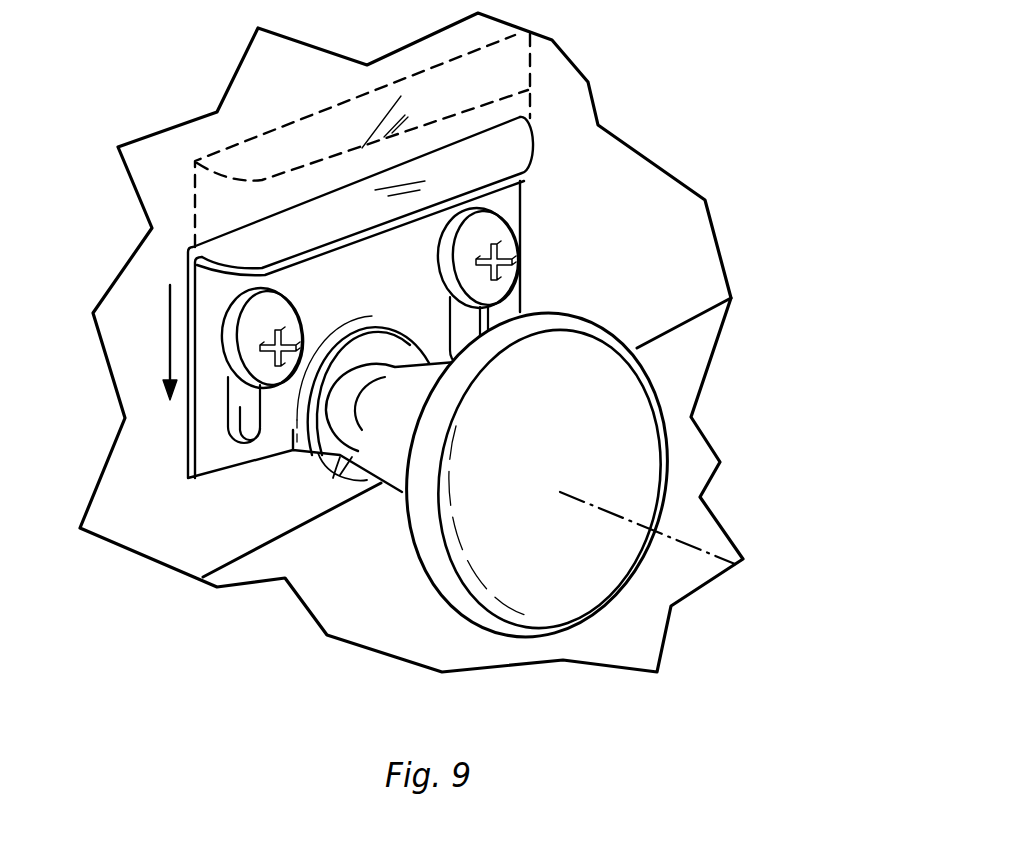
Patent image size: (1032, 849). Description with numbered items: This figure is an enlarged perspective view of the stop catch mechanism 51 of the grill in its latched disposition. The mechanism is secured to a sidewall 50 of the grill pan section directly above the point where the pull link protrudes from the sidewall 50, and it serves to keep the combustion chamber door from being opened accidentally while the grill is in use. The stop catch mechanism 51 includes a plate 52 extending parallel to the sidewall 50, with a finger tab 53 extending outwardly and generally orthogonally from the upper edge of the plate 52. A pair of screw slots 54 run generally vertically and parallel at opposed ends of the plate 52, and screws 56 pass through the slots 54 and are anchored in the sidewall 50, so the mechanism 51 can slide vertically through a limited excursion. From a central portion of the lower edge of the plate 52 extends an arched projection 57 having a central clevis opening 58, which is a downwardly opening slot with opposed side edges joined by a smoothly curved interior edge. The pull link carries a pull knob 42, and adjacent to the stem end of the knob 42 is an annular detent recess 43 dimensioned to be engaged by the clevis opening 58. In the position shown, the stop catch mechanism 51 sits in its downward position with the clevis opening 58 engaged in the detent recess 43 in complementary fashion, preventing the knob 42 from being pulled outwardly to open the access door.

The pull knob 42 is at (577, 436).
The annular detent recess 43 is at (345, 468).
The sidewall 50 is at (679, 329).
The stop catch mechanism 51 is at (333, 210).
The plate 52 is at (395, 281).
The finger tab 53 is at (483, 157).
The screw slots 54 is at (238, 443).
The screws 56 is at (257, 323).
The arched projection 57 is at (321, 452).
The clevis opening 58 is at (373, 372).